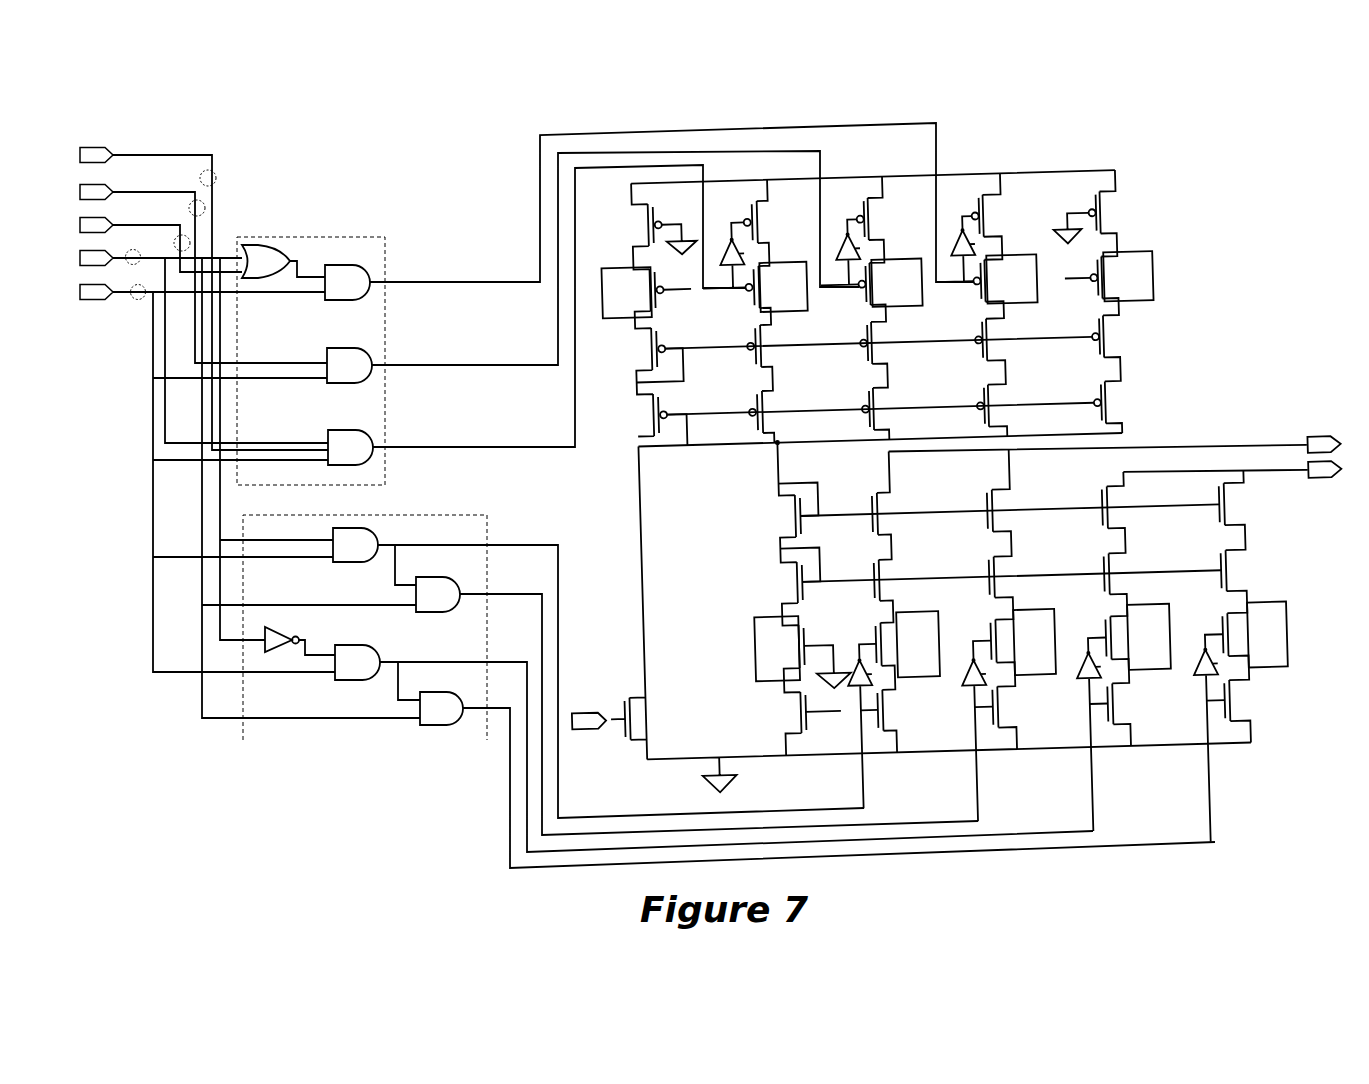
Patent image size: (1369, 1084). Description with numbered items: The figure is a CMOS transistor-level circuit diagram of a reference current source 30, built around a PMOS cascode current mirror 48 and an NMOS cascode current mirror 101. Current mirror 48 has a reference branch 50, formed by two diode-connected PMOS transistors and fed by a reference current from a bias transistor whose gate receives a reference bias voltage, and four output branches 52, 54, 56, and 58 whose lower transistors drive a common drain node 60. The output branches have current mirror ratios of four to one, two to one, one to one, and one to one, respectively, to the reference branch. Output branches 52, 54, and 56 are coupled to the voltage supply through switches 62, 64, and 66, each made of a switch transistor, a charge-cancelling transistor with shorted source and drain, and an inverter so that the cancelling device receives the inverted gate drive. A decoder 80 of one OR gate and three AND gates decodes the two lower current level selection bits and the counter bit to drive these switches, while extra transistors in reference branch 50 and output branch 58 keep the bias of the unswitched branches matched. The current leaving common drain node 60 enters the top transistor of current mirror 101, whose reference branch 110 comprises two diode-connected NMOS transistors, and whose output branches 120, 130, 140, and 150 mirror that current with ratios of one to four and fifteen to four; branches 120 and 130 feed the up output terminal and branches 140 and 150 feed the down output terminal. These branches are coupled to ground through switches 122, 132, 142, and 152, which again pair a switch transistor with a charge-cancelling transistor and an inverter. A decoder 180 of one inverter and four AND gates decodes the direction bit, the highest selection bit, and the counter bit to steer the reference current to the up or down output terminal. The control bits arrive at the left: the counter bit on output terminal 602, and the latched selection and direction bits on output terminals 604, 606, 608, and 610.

The reference current source 30 is at (1257, 175).
The cascode current mirror 48 is at (1182, 320).
The reference branch 50 is at (616, 440).
The output branch 52 is at (735, 431).
The output branch 54 is at (849, 434).
The output branch 56 is at (970, 430).
The output branch 58 is at (1082, 430).
The common drain node 60 is at (779, 444).
The switch 62 is at (804, 245).
The switch 64 is at (915, 247).
The switch 66 is at (1042, 249).
The decoder 80 is at (380, 233).
The current mirror 101 is at (1290, 616).
The reference branch 110 is at (792, 768).
The output branch 120 is at (907, 775).
The switch 122 is at (932, 691).
The output branch 130 is at (1022, 776).
The switch 132 is at (1047, 693).
The output branch 140 is at (1138, 772).
The switch 142 is at (1165, 692).
The output branch 150 is at (1263, 773).
The switch 152 is at (1275, 693).
The decoder 180 is at (243, 745).
The output terminal 602 is at (137, 300).
The output terminal 604 is at (130, 265).
The output terminal 606 is at (190, 243).
The output terminal 608 is at (205, 208).
The output terminal 610 is at (216, 176).